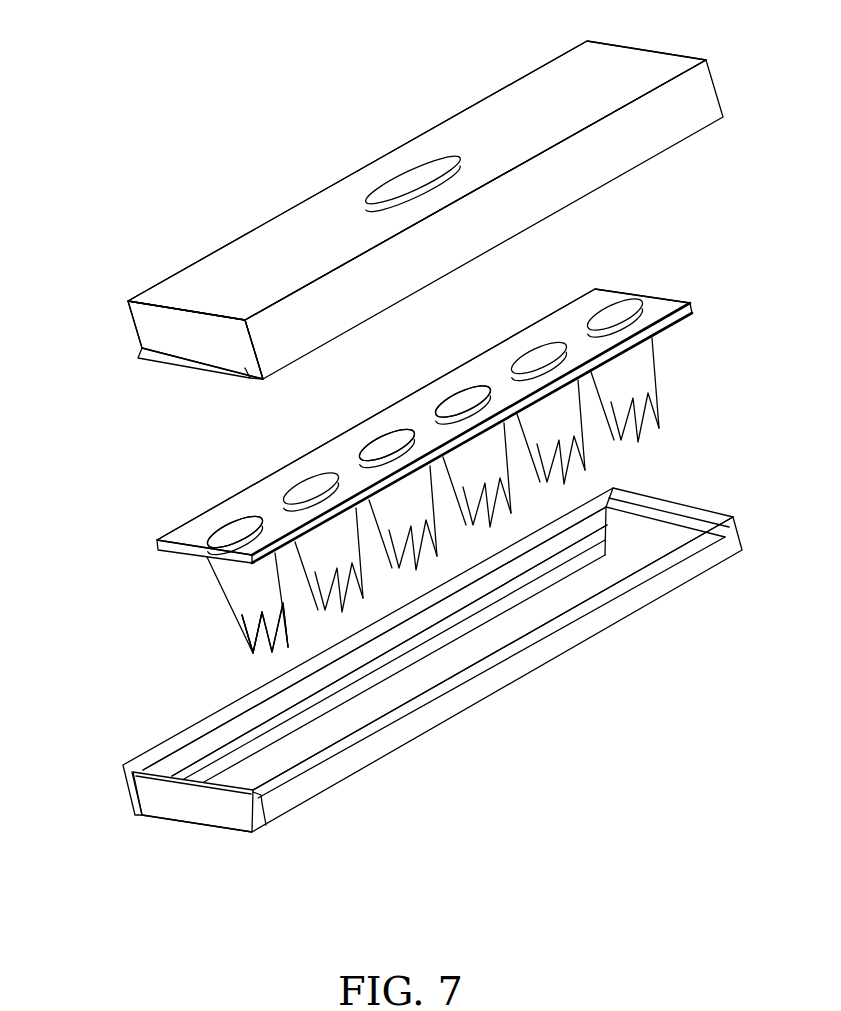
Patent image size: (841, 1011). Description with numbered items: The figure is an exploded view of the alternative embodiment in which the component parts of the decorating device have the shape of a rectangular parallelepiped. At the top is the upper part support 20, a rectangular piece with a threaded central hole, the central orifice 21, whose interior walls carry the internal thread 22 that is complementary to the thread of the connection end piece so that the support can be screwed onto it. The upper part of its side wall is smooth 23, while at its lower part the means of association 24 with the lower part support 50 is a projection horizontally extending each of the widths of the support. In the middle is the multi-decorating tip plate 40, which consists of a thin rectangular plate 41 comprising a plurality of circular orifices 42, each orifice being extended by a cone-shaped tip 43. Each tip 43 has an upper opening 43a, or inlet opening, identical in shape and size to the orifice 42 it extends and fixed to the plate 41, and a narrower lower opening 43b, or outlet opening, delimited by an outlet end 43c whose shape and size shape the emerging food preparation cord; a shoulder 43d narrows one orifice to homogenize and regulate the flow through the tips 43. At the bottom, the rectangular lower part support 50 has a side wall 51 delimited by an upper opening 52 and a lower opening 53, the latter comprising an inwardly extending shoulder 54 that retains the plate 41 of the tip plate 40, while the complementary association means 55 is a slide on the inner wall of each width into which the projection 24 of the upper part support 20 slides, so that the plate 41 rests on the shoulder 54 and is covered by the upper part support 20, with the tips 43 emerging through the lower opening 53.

The upper part support 20 is at (733, 41).
The central orifice 21 is at (388, 178).
The internal thread 22 is at (414, 192).
The smooth side wall 23 is at (143, 318).
The means of association 24 is at (150, 359).
The multi-decorating tip plate 40 is at (694, 292).
The plate 41 is at (182, 537).
The circular orifices 42 is at (610, 323).
The tip 43 is at (218, 583).
The upper opening 43a is at (224, 526).
The lower opening 43b is at (255, 640).
The outlet end 43c is at (253, 653).
The shoulder 43d is at (455, 406).
The lower part support 50 is at (738, 499).
The side wall 51 is at (168, 805).
The upper opening 52 is at (207, 750).
The lower opening 53 is at (382, 708).
The shoulder 54 is at (353, 685).
The complementary association means 55 is at (258, 797).